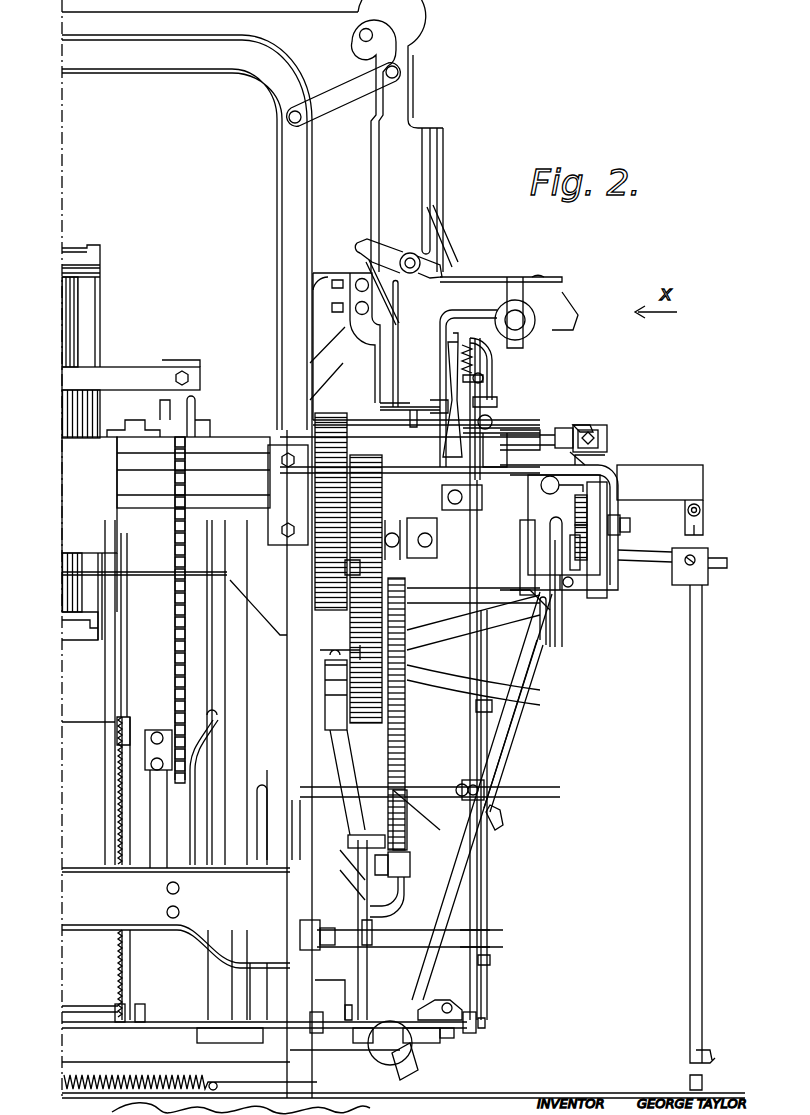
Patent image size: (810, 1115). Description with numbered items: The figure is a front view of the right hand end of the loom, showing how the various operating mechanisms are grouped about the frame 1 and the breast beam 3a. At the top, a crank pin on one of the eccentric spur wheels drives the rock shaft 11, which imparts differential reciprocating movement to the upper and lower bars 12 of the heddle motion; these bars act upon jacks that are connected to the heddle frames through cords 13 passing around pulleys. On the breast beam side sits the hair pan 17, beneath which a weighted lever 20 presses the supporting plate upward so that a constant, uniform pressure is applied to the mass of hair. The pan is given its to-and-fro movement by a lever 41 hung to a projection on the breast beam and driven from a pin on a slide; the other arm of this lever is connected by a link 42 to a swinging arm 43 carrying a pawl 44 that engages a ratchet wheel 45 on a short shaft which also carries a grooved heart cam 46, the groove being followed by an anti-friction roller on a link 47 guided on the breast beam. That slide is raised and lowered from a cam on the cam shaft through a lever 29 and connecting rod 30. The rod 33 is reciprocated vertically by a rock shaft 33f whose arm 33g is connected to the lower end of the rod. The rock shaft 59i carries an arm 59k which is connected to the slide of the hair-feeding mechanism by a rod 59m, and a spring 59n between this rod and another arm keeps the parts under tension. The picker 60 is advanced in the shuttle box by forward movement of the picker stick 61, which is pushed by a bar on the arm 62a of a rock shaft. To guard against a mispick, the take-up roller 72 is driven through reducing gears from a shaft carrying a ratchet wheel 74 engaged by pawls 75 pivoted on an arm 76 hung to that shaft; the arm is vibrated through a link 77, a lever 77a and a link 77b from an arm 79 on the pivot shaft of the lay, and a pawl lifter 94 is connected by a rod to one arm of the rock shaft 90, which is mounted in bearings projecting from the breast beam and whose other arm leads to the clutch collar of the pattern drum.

The frame 1 is at (303, 808).
The cords 13 is at (296, 8).
The upper and lower bars of the heddle motion 12 is at (427, 192).
The rock shaft 11 is at (412, 277).
The take-up roller 72 is at (144, 483).
The breast beam 3a is at (206, 630).
The rock shaft 90 is at (153, 573).
The rod 59m is at (128, 672).
The spring 59n is at (118, 835).
The arm 59k is at (122, 1010).
The rock shaft 59i is at (85, 1012).
The ratchet wheel 74 is at (405, 715).
The arm 62a is at (437, 625).
The connecting rod 30 is at (477, 545).
The rod 33 is at (482, 980).
The lever 41 is at (510, 610).
The link 42 is at (552, 650).
The picker stick 61 is at (515, 728).
The hair pan 17 is at (601, 522).
The picker 60 is at (568, 428).
The ratchet wheel 45 is at (585, 512).
The grooved heart cam 46 is at (588, 547).
The pawl 44 is at (585, 570).
The swinging arm 43 is at (568, 590).
The link 47 is at (630, 522).
The weighted lever 20 is at (648, 555).
The arm 76 is at (350, 818).
The link 77 is at (367, 840).
The pawls 75 is at (405, 812).
The pawl lifter 94 is at (410, 862).
The link 77b is at (372, 925).
The lever 29 is at (401, 935).
The lever 77a is at (367, 968).
The arm 79 is at (365, 1018).
The arm 33g is at (482, 1022).
The rock shaft 33f is at (460, 1030).